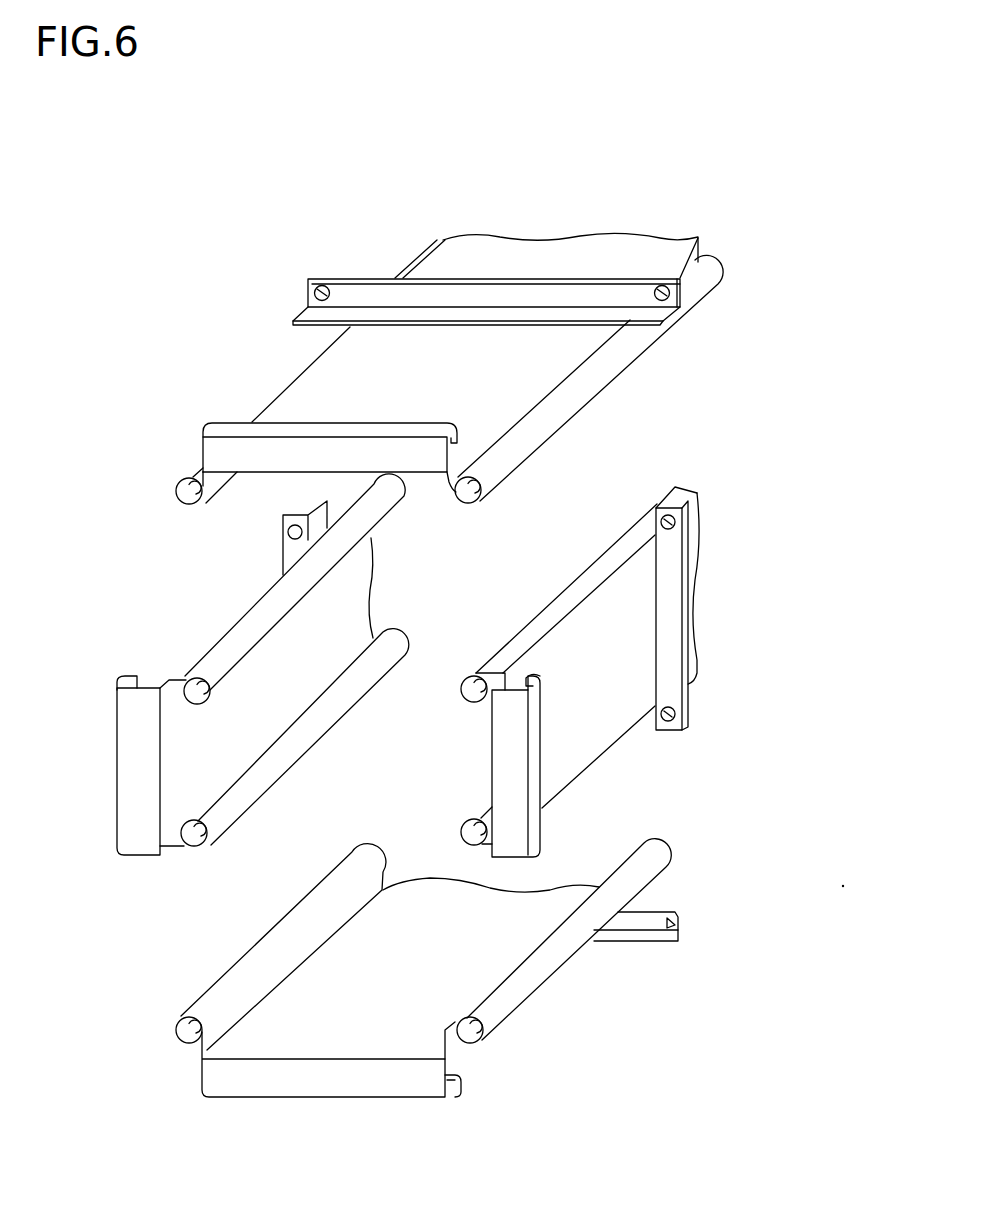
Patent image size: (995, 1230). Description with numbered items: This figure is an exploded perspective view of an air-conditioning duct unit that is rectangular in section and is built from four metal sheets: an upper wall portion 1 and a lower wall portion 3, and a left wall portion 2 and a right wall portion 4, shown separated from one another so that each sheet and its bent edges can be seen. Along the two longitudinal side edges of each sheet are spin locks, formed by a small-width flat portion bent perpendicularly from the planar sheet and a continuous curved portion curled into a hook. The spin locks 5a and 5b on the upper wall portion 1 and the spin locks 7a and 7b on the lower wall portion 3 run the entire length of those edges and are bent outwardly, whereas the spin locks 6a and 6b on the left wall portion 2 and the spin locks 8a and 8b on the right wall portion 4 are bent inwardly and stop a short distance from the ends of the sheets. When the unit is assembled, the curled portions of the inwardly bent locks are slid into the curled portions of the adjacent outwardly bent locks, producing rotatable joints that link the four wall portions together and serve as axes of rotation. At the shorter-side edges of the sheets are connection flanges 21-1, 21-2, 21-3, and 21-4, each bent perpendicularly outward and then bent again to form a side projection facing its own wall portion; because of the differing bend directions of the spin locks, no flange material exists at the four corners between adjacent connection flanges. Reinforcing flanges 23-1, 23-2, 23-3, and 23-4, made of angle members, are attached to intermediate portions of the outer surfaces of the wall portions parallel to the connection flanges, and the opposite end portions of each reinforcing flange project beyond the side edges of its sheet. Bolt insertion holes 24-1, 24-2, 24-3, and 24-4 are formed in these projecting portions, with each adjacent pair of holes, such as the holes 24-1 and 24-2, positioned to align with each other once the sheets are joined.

The upper wall portion 1 is at (345, 377).
The left wall portion 2 is at (192, 773).
The lower wall portion 3 is at (400, 1030).
The right wall portion 4 is at (590, 733).
The spin lock 5a is at (200, 478).
The spin lock 5b is at (555, 435).
The spin lock 6a is at (205, 672).
The spin lock 6b is at (235, 803).
The spin lock 7a is at (207, 1005).
The spin lock 7b is at (515, 1000).
The spin lock 8a is at (503, 650).
The spin lock 8b is at (487, 807).
The connection flange 21-1 is at (375, 445).
The connection flange 21-2 is at (135, 737).
The connection flange 21-3 is at (285, 1085).
The connection flange 21-4 is at (520, 800).
The reinforcing flange 23-1 is at (487, 296).
The reinforcing flange 23-2 is at (285, 555).
The reinforcing flange 23-3 is at (612, 938).
The reinforcing flange 23-4 is at (680, 622).
The bolt insertion hole 24-1 is at (322, 285).
The bolt insertion hole 24-2 is at (289, 533).
The bolt insertion hole 24-3 is at (678, 938).
The bolt insertion hole 24-4 is at (674, 522).